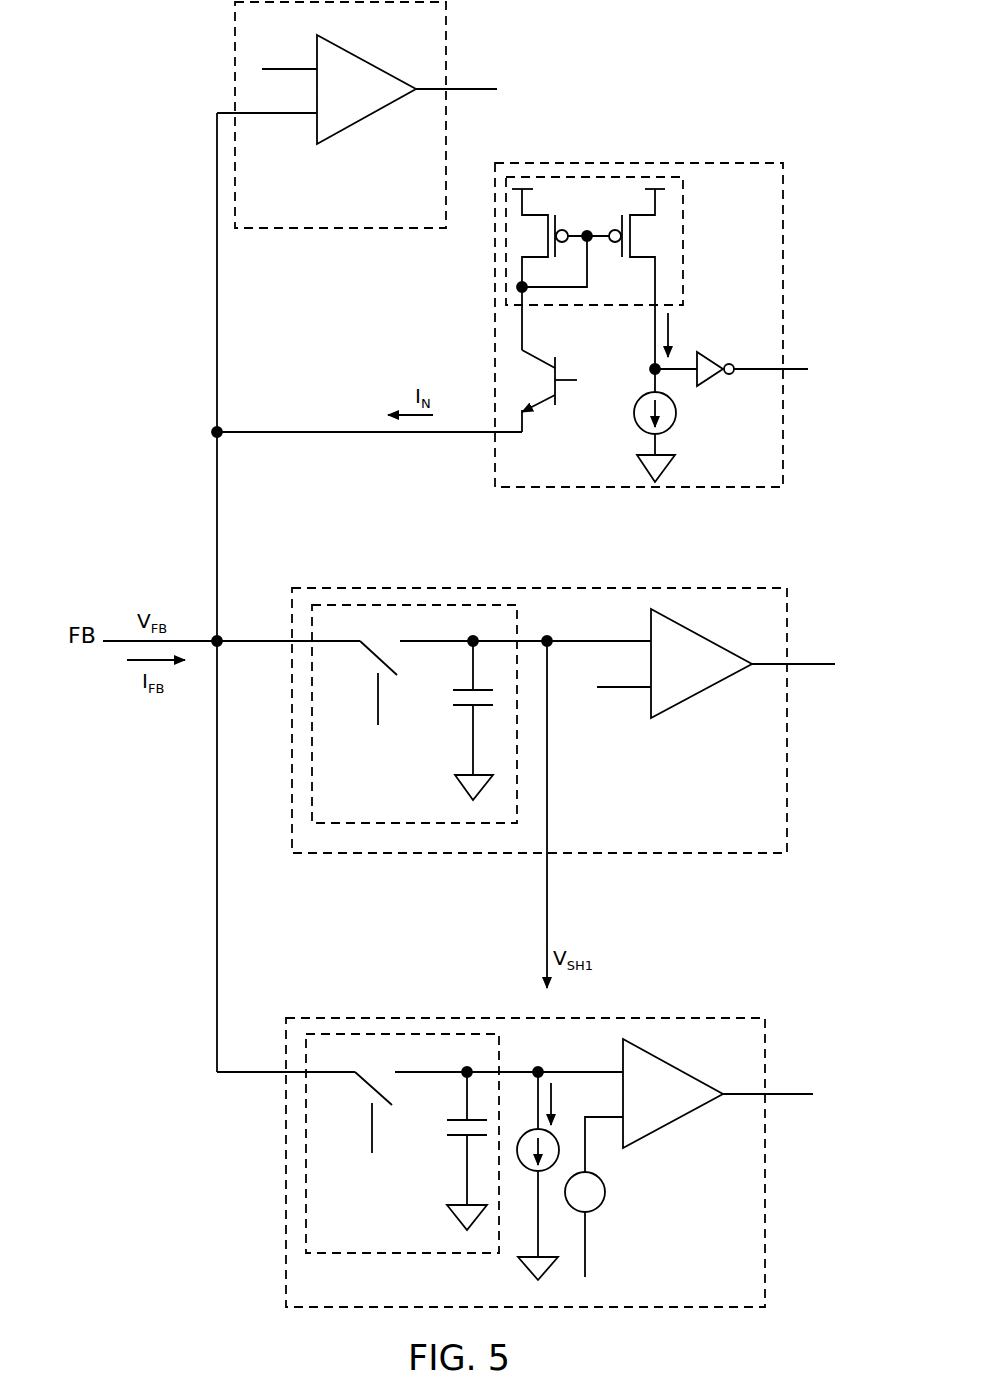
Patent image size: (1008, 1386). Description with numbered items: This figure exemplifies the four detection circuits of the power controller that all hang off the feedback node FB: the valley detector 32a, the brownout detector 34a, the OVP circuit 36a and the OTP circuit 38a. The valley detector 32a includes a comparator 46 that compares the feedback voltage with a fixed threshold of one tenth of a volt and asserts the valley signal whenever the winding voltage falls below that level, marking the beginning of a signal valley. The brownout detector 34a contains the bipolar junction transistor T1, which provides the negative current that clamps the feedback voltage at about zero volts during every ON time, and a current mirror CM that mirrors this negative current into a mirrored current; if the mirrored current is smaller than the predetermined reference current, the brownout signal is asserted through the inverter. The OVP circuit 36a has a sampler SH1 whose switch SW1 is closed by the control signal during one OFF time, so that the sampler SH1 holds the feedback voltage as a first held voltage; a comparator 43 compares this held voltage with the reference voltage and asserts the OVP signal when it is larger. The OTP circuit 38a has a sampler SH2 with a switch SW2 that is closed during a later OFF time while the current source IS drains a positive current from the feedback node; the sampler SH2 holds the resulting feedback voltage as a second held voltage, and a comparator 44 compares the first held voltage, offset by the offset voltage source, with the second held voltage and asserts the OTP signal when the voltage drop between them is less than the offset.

The valley detector 32a is at (235, 58).
The comparator 46 is at (350, 122).
The brownout detector 34a is at (698, 163).
The current mirror CM is at (683, 245).
The bipolar junction transistor T1 is at (568, 359).
The OVP circuit 36a is at (368, 588).
The sampler SH1 is at (477, 605).
The switch SW1 is at (450, 687).
The comparator 43 is at (700, 695).
The OTP circuit 38a is at (372, 1018).
The sampler SH2 is at (483, 1034).
The switch SW2 is at (484, 1112).
The current source IS is at (533, 1176).
The comparator 44 is at (672, 1123).